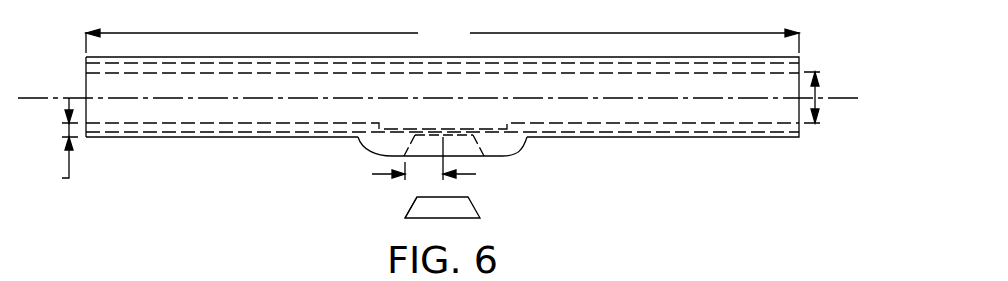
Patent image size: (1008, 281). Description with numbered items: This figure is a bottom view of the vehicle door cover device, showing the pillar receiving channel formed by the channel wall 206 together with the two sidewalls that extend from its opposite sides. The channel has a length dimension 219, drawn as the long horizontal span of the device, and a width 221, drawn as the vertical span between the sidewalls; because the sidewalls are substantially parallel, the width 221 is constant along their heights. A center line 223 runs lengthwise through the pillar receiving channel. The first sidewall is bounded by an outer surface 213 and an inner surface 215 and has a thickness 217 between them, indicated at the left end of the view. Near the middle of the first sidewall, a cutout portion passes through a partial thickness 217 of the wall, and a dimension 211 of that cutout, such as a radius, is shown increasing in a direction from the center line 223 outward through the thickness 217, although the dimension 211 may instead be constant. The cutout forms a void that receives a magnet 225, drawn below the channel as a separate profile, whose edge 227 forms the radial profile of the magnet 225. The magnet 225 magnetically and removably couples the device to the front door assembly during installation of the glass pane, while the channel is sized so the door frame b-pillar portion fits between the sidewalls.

The channel wall 206 is at (793, 77).
The dimension 211 is at (424, 163).
The outer surface 213 is at (202, 138).
The inner surface 215 is at (165, 122).
The thickness 217 is at (50, 147).
The length dimension 219 is at (442, 37).
The width 221 is at (826, 106).
The center line 223 is at (862, 98).
The magnet 225 is at (408, 213).
The edge 227 is at (478, 213).